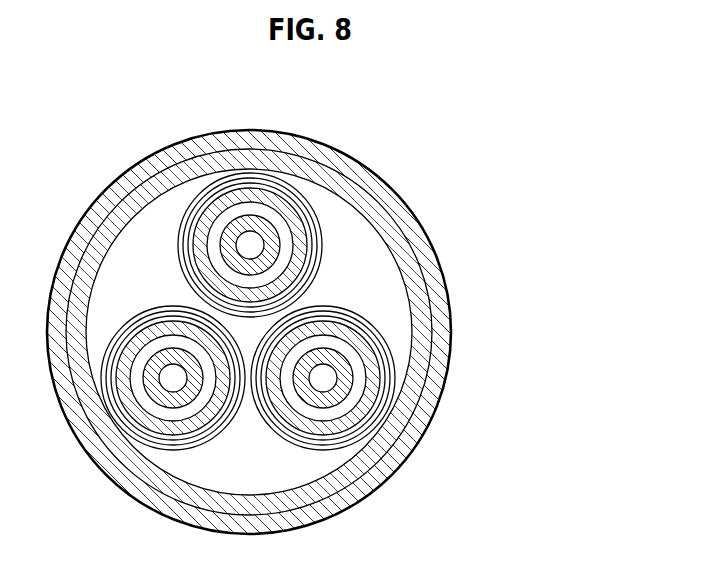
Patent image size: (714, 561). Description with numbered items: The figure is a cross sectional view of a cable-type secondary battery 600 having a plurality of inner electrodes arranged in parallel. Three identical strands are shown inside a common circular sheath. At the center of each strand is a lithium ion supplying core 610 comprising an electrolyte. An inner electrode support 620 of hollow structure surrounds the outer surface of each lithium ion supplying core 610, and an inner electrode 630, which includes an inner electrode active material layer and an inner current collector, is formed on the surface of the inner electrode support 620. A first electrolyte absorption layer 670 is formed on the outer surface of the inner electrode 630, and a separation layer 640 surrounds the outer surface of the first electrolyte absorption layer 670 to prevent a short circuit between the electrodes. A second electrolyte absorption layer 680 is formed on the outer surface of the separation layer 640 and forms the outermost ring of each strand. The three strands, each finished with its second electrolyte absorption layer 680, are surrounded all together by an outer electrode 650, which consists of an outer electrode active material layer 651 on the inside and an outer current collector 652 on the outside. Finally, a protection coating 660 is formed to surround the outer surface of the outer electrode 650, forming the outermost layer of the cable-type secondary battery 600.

The cable-type secondary battery 600 is at (419, 166).
The lithium ion supplying core 610 is at (240, 247).
The inner electrode support 620 is at (235, 225).
The inner electrode 630 is at (252, 212).
The separation layer 640 is at (305, 223).
The outer electrode 650 is at (518, 242).
The outer electrode active material layer 651 is at (390, 272).
The outer current collector 652 is at (420, 300).
The protection coating 660 is at (438, 327).
The first electrolyte absorption layer 670 is at (277, 205).
The second electrolyte absorption layer 680 is at (320, 237).